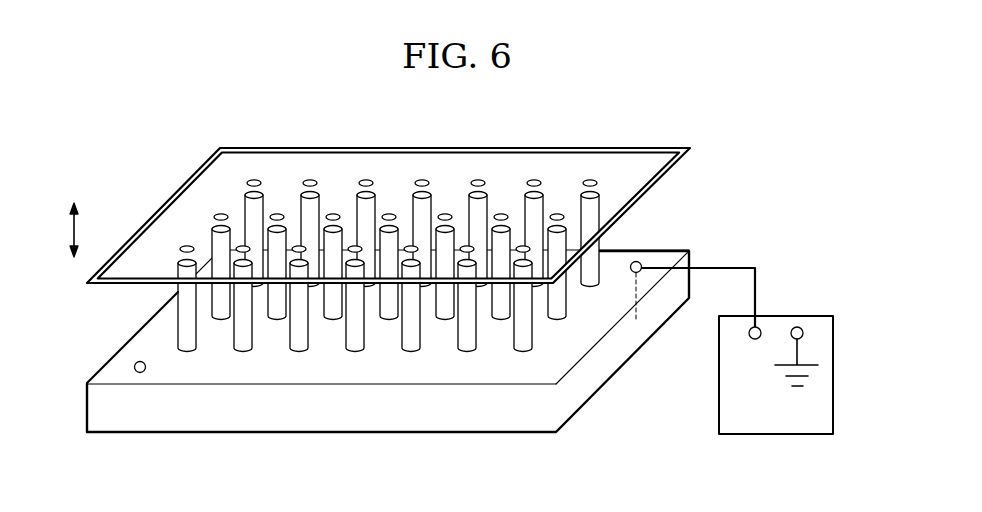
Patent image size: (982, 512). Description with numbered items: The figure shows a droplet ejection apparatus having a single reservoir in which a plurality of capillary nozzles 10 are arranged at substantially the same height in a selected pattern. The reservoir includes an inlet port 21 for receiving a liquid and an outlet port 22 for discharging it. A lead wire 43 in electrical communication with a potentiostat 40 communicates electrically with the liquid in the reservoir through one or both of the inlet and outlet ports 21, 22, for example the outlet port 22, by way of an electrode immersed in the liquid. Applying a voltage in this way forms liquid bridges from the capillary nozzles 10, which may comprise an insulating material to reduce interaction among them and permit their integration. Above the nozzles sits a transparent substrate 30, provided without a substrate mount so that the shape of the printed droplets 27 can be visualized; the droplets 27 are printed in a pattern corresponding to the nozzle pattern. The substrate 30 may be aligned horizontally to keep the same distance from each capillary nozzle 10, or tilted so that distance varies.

The capillary nozzles 10 is at (180, 330).
The inlet port 21 is at (145, 372).
The outlet port 22 is at (639, 262).
The droplets 27 is at (219, 213).
The transparent substrate 30 is at (150, 218).
The potentiostat 40 is at (804, 316).
The lead wire 43 is at (722, 268).